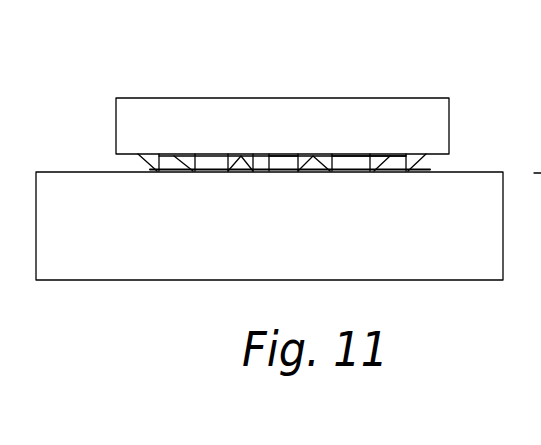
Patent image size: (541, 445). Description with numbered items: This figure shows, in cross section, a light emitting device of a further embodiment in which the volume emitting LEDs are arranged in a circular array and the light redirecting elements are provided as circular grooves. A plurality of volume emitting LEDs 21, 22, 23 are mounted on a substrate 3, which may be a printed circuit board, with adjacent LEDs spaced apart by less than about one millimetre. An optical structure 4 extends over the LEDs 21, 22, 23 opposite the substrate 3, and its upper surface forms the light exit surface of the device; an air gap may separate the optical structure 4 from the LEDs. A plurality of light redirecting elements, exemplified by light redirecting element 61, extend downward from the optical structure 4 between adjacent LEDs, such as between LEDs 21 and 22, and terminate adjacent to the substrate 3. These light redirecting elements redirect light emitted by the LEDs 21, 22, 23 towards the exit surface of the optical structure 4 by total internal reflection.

The substrate 3 is at (433, 252).
The optical structure 4 is at (417, 108).
The volume emitting LED 21 is at (214, 157).
The volume emitting LED 22 is at (283, 163).
The volume emitting LED 23 is at (352, 160).
The light redirecting element 61 is at (260, 163).